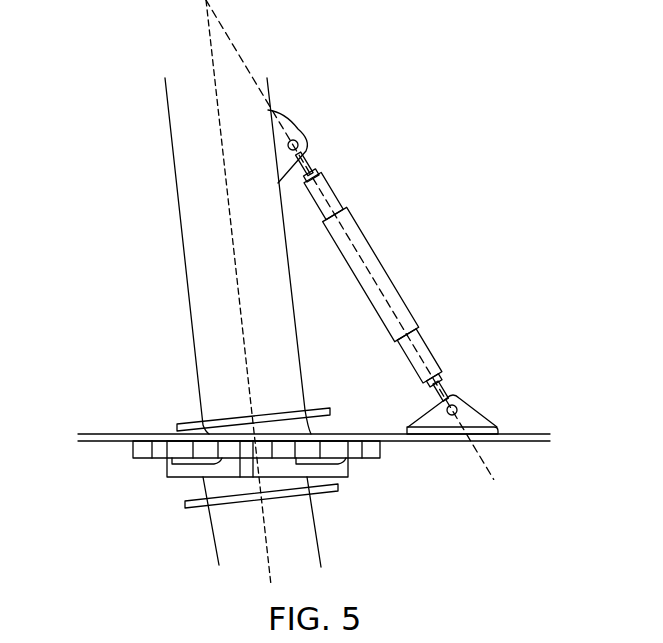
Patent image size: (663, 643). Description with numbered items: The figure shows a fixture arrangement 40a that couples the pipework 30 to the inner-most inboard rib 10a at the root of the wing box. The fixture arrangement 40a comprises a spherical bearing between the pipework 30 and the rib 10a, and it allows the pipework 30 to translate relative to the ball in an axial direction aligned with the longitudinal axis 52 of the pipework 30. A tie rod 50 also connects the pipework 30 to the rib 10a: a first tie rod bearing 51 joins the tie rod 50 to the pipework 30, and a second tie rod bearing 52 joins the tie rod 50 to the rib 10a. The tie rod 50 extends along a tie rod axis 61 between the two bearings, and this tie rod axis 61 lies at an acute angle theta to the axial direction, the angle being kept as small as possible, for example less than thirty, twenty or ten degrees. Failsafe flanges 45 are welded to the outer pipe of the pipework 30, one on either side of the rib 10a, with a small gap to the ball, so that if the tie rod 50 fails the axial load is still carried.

The inner-most inboard rib 10a is at (100, 442).
The pipework 30 is at (171, 262).
The tie rod axis 61 is at (238, 57).
The first tie rod bearing 51 is at (316, 141).
The tie rod 50 is at (384, 281).
The second tie rod bearing 52 is at (489, 406).
The failsafe flange 45 is at (315, 410).
The fixture arrangement 40a is at (164, 425).